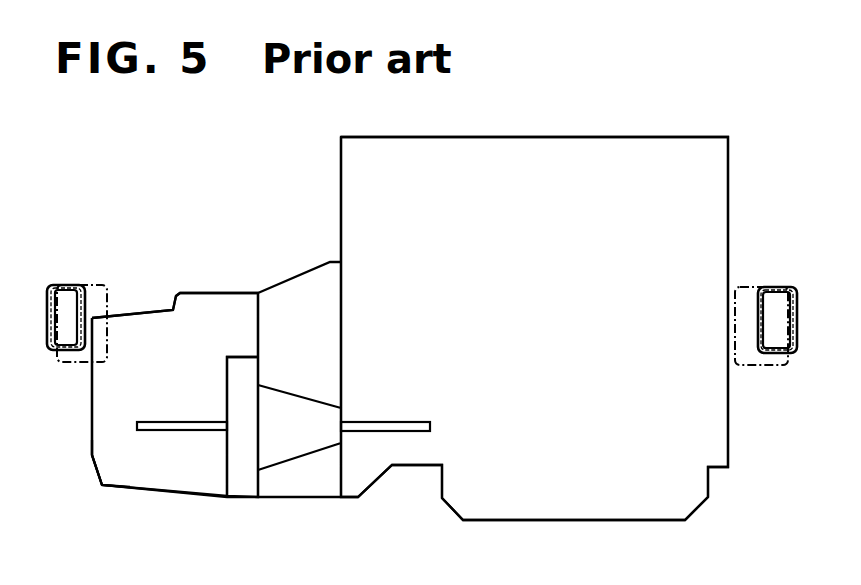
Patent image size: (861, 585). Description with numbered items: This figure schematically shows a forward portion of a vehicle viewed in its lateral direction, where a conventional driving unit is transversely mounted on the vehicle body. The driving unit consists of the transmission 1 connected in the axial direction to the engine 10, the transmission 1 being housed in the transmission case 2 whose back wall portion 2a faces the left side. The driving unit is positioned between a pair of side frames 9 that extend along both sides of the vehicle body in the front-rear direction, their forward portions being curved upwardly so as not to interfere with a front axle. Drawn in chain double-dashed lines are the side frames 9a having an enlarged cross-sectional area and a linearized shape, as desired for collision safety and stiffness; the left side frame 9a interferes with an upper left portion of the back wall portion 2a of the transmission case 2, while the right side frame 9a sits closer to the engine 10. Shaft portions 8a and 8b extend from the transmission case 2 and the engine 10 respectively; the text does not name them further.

The transmission 1 is at (145, 267).
The transmission case 2 is at (197, 307).
The back wall portion 2a is at (90, 440).
The first output shaft 8a is at (173, 422).
The second output shaft 8b is at (388, 423).
The side frames 9 is at (65, 285).
The side frames having enlarged cross-section 9a is at (75, 367).
The engine 10 is at (548, 135).